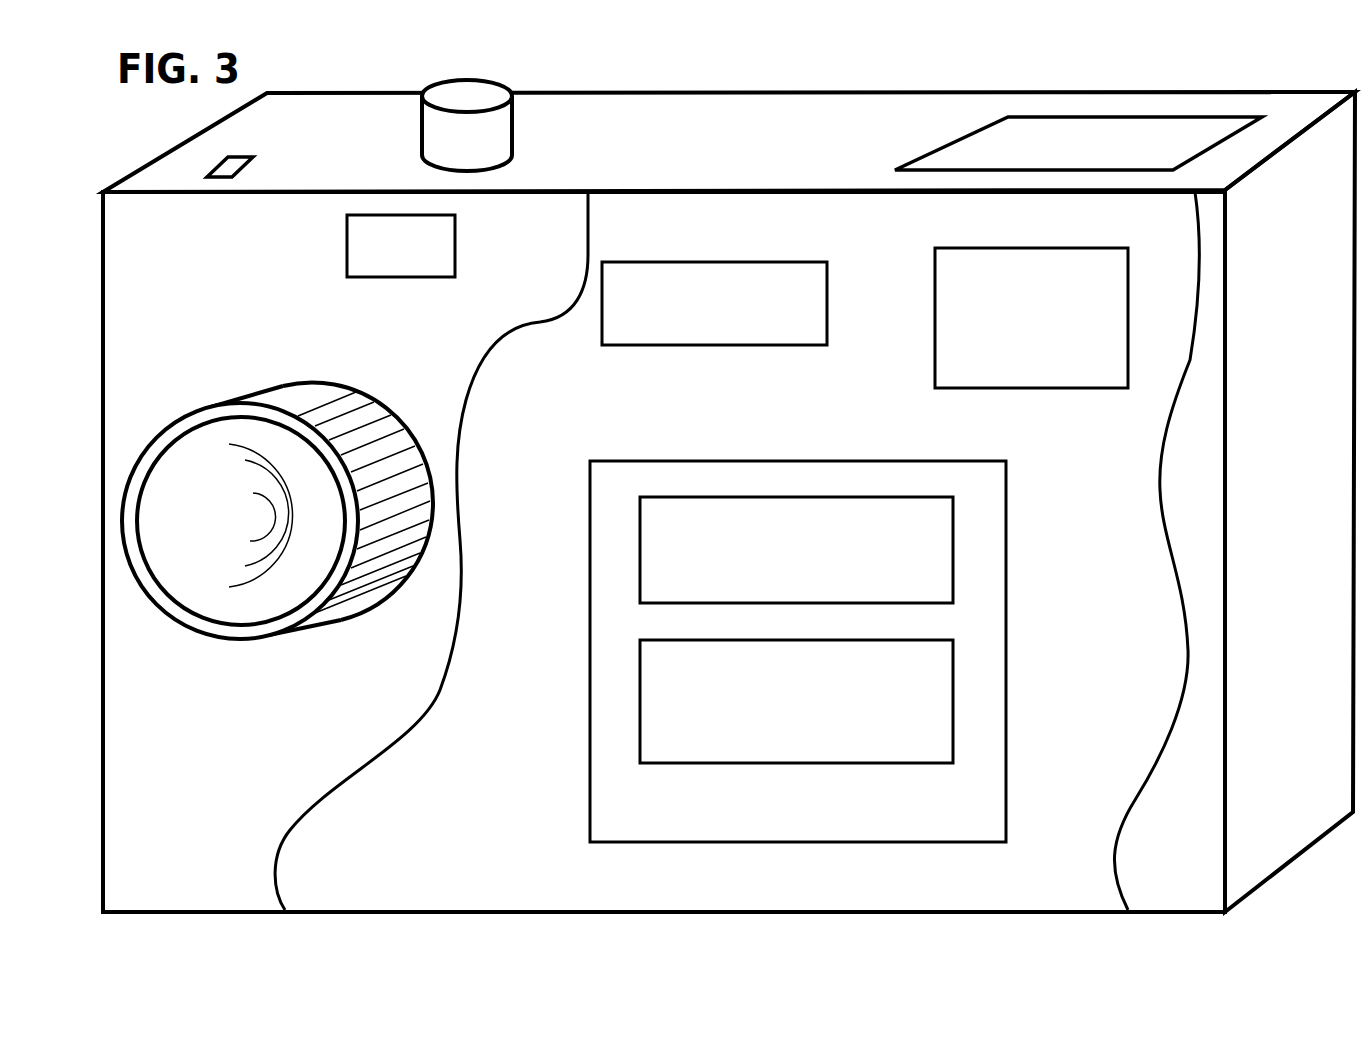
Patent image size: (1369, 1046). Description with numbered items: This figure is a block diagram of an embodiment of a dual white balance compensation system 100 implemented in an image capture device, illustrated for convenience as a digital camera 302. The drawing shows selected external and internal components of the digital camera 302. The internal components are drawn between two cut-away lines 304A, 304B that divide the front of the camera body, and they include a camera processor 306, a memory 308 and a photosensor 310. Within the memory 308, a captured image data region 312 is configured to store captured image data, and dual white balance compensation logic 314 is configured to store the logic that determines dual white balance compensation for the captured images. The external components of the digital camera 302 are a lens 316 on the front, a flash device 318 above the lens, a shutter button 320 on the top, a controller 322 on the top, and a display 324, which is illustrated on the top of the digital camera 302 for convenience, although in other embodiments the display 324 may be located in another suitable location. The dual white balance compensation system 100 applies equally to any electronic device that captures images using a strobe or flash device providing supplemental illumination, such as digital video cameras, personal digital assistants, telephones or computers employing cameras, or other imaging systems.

The dual white balance compensation system 100 is at (110, 162).
The digital camera 302 is at (172, 889).
The cut-away line 304A is at (570, 310).
The cut-away line 304B is at (1158, 765).
The processor 306 is at (1110, 381).
The memory 308 is at (989, 821).
The photosensor 310 is at (814, 336).
The captured image data region 312 is at (939, 591).
The dual white balance compensation logic 314 is at (939, 744).
The lens 316 is at (302, 382).
The flash device 318 is at (407, 278).
The shutter button 320 is at (513, 115).
The controller 322 is at (247, 163).
The display 324 is at (1114, 161).